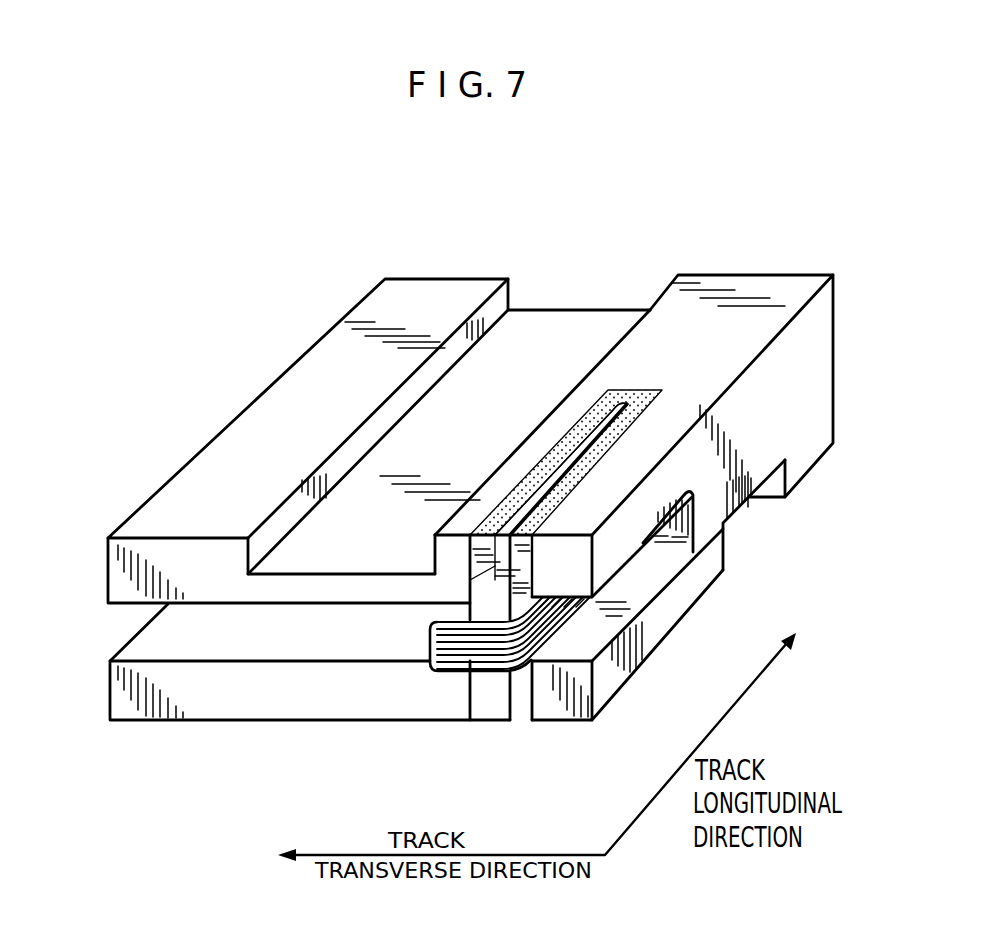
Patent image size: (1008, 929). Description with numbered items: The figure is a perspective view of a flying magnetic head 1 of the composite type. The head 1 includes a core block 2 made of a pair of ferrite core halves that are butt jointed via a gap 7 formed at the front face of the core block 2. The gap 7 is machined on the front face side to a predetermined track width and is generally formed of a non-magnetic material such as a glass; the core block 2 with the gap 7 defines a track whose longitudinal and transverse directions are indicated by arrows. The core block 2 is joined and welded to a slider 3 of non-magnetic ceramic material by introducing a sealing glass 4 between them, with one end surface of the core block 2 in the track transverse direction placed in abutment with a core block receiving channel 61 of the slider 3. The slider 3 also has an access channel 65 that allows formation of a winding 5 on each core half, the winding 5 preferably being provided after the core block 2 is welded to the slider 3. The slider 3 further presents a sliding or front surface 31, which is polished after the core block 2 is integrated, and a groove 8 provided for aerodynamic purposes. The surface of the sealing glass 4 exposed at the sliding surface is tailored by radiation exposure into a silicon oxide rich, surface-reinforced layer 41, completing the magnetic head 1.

The flying magnetic head 1 is at (468, 256).
The core block 2 is at (597, 435).
The slider 3 is at (808, 408).
The sliding surface 31 is at (751, 273).
The sealing glass 4 is at (540, 568).
The SiO2 rich layer 41 is at (658, 392).
The winding 5 is at (445, 671).
The core block receiving channel 61 is at (528, 698).
The access channel 65 is at (140, 606).
The gap 7 is at (542, 494).
The groove 8 is at (565, 309).